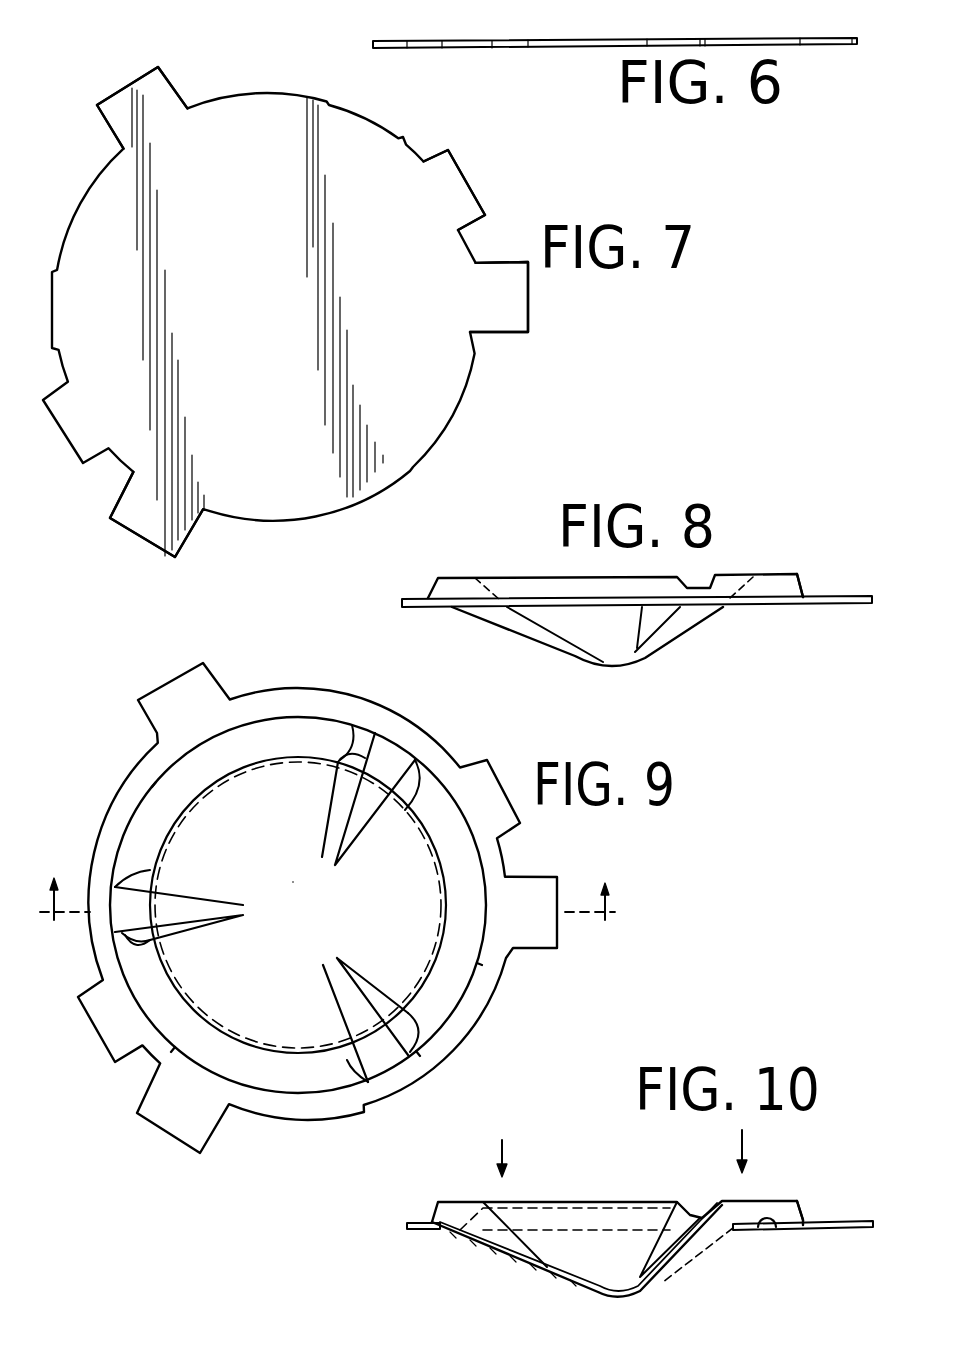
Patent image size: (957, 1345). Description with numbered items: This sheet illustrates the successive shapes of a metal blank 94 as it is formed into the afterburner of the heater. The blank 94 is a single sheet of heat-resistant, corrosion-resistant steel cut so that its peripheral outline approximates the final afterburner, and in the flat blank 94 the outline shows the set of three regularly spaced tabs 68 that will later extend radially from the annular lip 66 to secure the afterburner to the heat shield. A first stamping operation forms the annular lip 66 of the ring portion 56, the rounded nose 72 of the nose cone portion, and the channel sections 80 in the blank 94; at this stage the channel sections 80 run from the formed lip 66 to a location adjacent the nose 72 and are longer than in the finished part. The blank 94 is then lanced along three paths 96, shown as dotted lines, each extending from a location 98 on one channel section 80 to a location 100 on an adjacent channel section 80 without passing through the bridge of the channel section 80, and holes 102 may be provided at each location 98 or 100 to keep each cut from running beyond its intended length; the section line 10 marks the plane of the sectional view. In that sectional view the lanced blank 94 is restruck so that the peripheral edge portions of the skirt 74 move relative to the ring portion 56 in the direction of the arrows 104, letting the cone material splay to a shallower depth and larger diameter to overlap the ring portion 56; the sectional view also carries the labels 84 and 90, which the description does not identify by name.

In FIG. 9, the section line 10- 10 is at (327, 881).
In FIG. 8, the ring portion 56 is at (455, 577).
In FIG. 9, the ring portion 56 is at (263, 1073).
In FIG. 10, the ring portion 56 is at (768, 1200).
In FIG. 8, the annular lip 66 is at (802, 595).
In FIG. 10, the annular lip 66 is at (807, 1218).
In FIG. 7, the tabs 68 is at (133, 83).
In FIG. 8, the rounded nose 72 is at (627, 667).
In FIG. 9, the rounded nose 72 is at (293, 882).
In FIG. 10, the rounded nose 72 is at (610, 1297).
In FIG. 10, the skirt 74 is at (718, 1262).
In FIG. 9, the channel sections 80 is at (385, 762).
In FIG. 10, the outer wall 84 is at (460, 1233).
In FIG. 10, the dimple 90 is at (768, 1228).
In FIG. 6, the blank 94 is at (537, 42).
In FIG. 7, the blank 94 is at (295, 492).
In FIG. 8, the blank 94 is at (823, 597).
In FIG. 9, the blank 94 is at (105, 1013).
In FIG. 10, the blank 94 is at (832, 1220).
In FIG. 9, the paths 96 is at (187, 810).
In FIG. 9, the location 98 is at (398, 785).
In FIG. 9, the location 100 is at (362, 760).
In FIG. 9, the holes 102 is at (138, 885).
In FIG. 10, the arrows 104 is at (507, 1150).